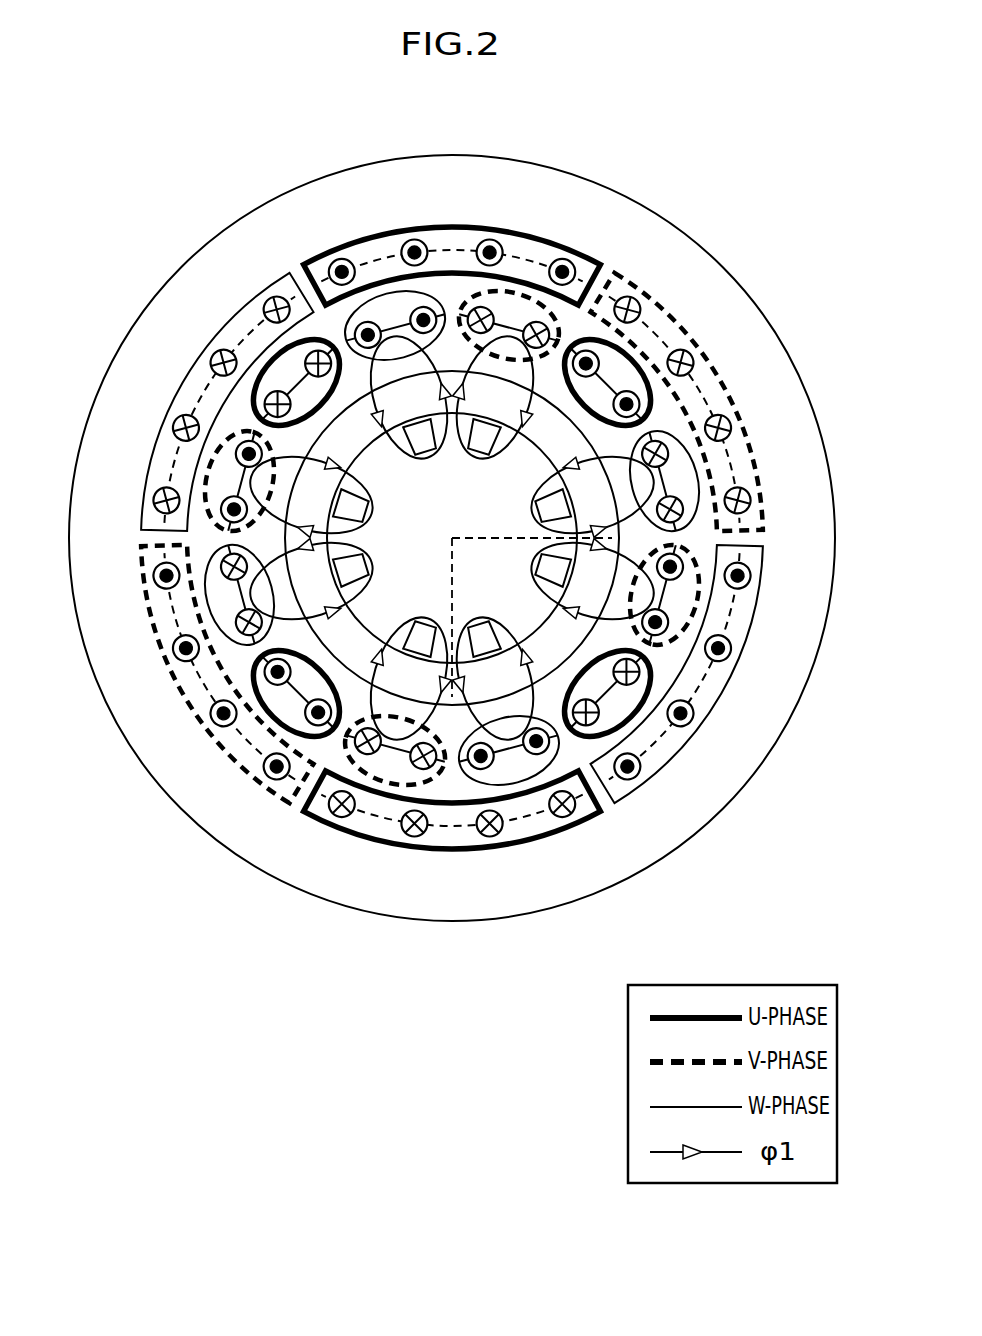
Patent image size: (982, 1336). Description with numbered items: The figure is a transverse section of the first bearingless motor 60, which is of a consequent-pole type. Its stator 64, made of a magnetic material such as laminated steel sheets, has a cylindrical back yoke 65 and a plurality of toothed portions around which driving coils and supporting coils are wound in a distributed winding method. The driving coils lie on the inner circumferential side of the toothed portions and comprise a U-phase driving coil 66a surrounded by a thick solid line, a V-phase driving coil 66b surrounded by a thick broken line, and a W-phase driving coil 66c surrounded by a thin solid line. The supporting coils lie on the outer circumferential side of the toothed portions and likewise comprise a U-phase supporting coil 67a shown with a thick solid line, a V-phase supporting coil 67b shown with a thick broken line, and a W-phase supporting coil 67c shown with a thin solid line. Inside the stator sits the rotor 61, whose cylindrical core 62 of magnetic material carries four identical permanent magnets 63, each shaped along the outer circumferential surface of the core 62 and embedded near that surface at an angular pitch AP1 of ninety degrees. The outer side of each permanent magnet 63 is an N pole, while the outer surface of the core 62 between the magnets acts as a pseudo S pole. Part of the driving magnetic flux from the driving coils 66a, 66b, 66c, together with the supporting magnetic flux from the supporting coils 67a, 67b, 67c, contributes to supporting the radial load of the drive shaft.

The first bearingless motor 60 is at (728, 163).
The rotor 61 is at (614, 442).
The core 62 is at (556, 446).
The permanent magnet 63 is at (553, 508).
The stator 64 is at (618, 182).
The back yoke 65 is at (538, 184).
The U-phase driving coil 66a is at (270, 700).
The V-phase driving coil 66b is at (370, 755).
The W-phase driving coil 66c is at (484, 768).
The U-phase supporting coil 67a is at (492, 232).
The V-phase supporting coil 67b is at (207, 718).
The W-phase supporting coil 67c is at (170, 420).
The angular pitch AP1 is at (492, 538).